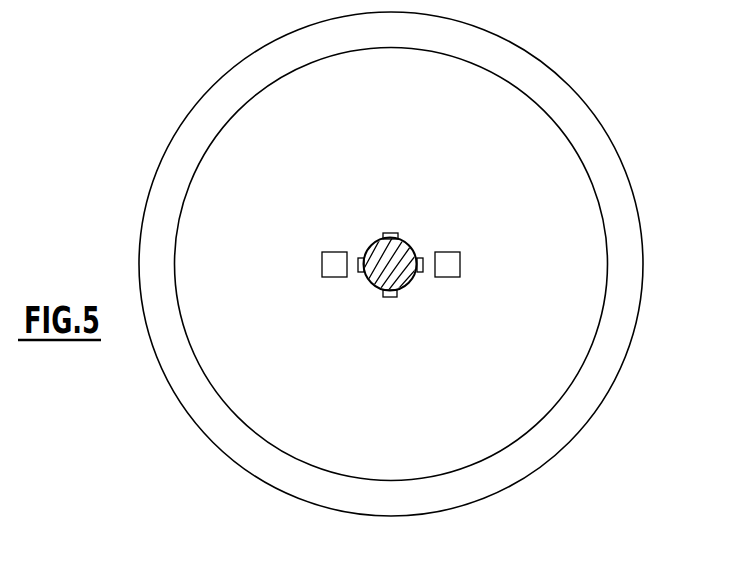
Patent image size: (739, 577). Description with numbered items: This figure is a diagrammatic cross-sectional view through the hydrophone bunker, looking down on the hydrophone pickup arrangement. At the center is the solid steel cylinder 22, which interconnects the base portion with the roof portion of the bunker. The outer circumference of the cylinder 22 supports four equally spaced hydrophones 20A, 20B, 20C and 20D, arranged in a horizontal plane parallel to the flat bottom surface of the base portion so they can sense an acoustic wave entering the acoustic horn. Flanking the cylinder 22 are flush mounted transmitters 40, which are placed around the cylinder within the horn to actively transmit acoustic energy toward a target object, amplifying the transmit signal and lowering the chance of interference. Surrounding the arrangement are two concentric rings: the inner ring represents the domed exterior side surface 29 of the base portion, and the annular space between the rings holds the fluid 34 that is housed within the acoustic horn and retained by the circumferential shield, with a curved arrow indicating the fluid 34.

The domed exterior side surface 29 is at (170, 191).
The fluid 34 is at (274, 428).
The solid steel cylinder 22 is at (378, 286).
The hydrophone 20A is at (393, 233).
The hydrophone 20B is at (421, 272).
The hydrophone 20C is at (392, 298).
The hydrophone 20D is at (360, 272).
The flush mounted transmitter 40 is at (335, 252).